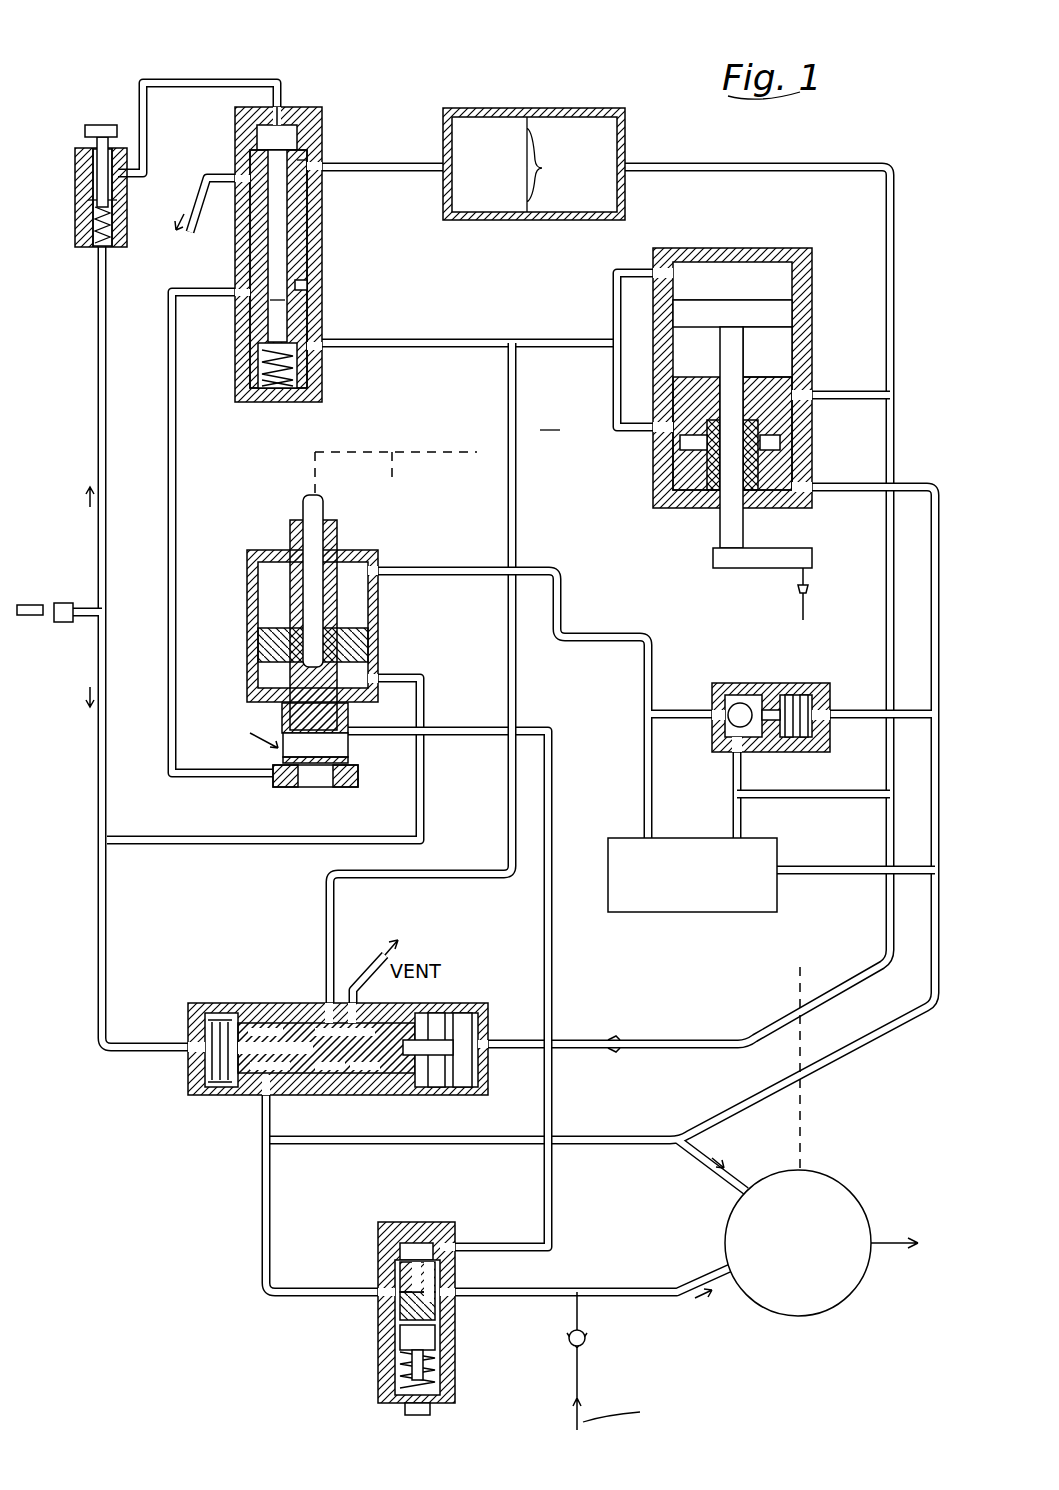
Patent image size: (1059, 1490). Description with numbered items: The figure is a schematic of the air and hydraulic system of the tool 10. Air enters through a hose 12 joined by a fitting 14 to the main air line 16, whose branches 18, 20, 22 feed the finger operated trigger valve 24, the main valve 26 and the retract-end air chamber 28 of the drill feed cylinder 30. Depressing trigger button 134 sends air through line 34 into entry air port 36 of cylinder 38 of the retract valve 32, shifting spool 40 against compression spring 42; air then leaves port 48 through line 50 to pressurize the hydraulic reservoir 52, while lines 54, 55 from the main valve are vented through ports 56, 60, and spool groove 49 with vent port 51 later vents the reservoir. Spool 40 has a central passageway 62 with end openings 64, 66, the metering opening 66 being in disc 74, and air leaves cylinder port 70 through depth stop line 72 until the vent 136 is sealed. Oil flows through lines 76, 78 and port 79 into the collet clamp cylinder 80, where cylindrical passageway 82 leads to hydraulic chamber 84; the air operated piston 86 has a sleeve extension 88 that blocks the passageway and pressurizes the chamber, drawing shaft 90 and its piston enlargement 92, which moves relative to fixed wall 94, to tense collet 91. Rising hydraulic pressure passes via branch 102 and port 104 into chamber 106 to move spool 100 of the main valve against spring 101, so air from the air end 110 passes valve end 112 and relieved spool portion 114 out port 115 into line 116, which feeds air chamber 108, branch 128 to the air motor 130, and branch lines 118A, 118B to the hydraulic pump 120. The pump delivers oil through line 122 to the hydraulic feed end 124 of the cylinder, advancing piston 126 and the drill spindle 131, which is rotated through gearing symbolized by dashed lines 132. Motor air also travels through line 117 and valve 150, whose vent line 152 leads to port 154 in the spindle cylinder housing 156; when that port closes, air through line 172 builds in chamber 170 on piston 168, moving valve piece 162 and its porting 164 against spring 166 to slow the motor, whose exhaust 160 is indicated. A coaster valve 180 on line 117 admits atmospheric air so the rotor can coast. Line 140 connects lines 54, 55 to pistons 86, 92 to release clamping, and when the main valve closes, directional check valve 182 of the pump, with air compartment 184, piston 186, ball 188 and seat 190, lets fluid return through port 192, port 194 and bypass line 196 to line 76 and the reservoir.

The tool 10 is at (551, 421).
The hose 12 is at (30, 604).
The fitting 14 is at (62, 624).
The main air line 16 is at (98, 760).
The branch 18 is at (98, 310).
The branch 20 is at (98, 952).
The branch 22 is at (280, 843).
The trigger valve 24 is at (74, 165).
The main valve 26 is at (301, 1047).
The retract-end air chamber 28 is at (272, 676).
The drill feed cylinder 30 is at (338, 659).
The retract valve 32 is at (274, 249).
The line 34 is at (200, 82).
The entry air port 36 is at (280, 105).
The retract valve cylinder 38 is at (323, 268).
The spool 40 is at (313, 234).
The compression spring 42 is at (318, 384).
The cylinder port 48 is at (318, 165).
The spool groove 49 is at (305, 180).
The line 50 is at (390, 165).
The vent port 51 is at (233, 176).
The hydraulic reservoir 52 is at (520, 108).
The line 54 is at (505, 372).
The line 55 is at (420, 340).
The cylinder port 56 is at (322, 346).
The cylinder port 60 is at (256, 348).
The central passageway 62 is at (275, 300).
The end opening 64 is at (262, 130).
The end opening 66 is at (307, 318).
The cylinder port 70 is at (236, 290).
The line 72 is at (168, 480).
The disc 74 is at (262, 368).
The line 76 is at (780, 165).
The line 78 is at (846, 398).
The port 79 is at (805, 395).
The collet clamp cylinder 80 is at (717, 417).
The cylindrical passageway 82 is at (718, 378).
The hydraulic fluid chamber 84 is at (775, 340).
The air operated piston 86 is at (795, 462).
The cylindrical sleeve extension 88 is at (665, 436).
The central shaft 90 is at (735, 560).
The collet 91 is at (812, 600).
The piston enlargement 92 is at (775, 305).
The fixed opposite wall 94 is at (660, 395).
The spool 100 is at (368, 1090).
The spring 101 is at (210, 1012).
The branch 102 is at (598, 1040).
The port 104 is at (480, 1060).
The hydraulic fluid chamber 106 is at (475, 1012).
The air chamber 108 is at (762, 490).
The air end 110 is at (208, 1090).
The valve end 112 is at (240, 1090).
The annular relieved spool portion 114 is at (280, 1020).
The port 115 is at (272, 1092).
The line 116 is at (934, 480).
The line 117 is at (262, 1212).
The branch line 118A is at (868, 718).
The branch line 118B is at (818, 876).
The hydraulic pump 120 is at (625, 836).
The line 122 is at (563, 608).
The hydraulic fluid feed end 124 is at (270, 600).
The piston 126 is at (380, 615).
The branch 128 is at (718, 1175).
The air motor 130 is at (808, 1310).
The drill spindle 131 is at (324, 515).
The dashed lines 132 is at (393, 462).
The trigger button 134 is at (110, 122).
The vent 136 is at (278, 785).
The line 140 is at (612, 285).
The valve 150 is at (331, 1297).
The vent line 152 is at (545, 912).
The port 154 is at (345, 740).
The spindle cylinder housing 156 is at (348, 708).
The exhaust 160 is at (895, 1242).
The valve piece 162 is at (440, 1335).
The porting 164 is at (448, 1300).
The spring 166 is at (440, 1370).
The piston 168 is at (400, 1268).
The chamber 170 is at (416, 1242).
The line 172 is at (446, 1280).
The coaster valve 180 is at (592, 1335).
The directional check valve 182 is at (767, 714).
The air compartment 184 is at (808, 700).
The piston 186 is at (790, 745).
The ball valve piece 188 is at (728, 750).
The seat 190 is at (728, 722).
The port 192 is at (728, 710).
The port 194 is at (742, 758).
The bypass line 196 is at (812, 798).